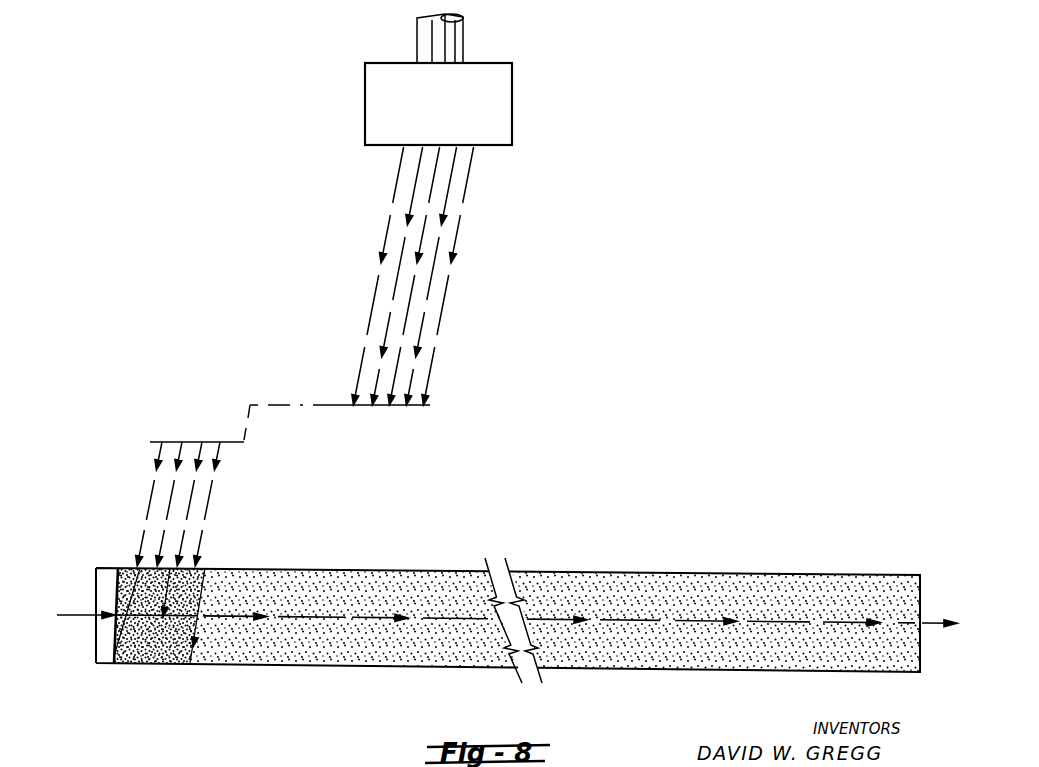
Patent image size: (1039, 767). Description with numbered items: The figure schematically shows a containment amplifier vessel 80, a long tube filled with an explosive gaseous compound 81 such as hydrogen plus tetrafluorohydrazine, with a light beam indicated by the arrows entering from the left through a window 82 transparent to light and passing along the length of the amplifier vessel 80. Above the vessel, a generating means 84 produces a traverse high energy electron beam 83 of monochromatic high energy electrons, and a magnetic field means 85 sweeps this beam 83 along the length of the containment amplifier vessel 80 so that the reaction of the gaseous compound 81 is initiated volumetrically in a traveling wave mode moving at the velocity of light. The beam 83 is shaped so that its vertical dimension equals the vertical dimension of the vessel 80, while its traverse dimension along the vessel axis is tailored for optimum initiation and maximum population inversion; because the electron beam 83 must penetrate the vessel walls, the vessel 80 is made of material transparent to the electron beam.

The containment amplifier vessel 80 is at (501, 619).
The explosive gaseous compound 81 is at (153, 655).
The window 82 is at (115, 593).
The traverse high energy electron beam 83 is at (452, 250).
The generating means 84 is at (463, 45).
The magnetic field means 85 is at (512, 105).